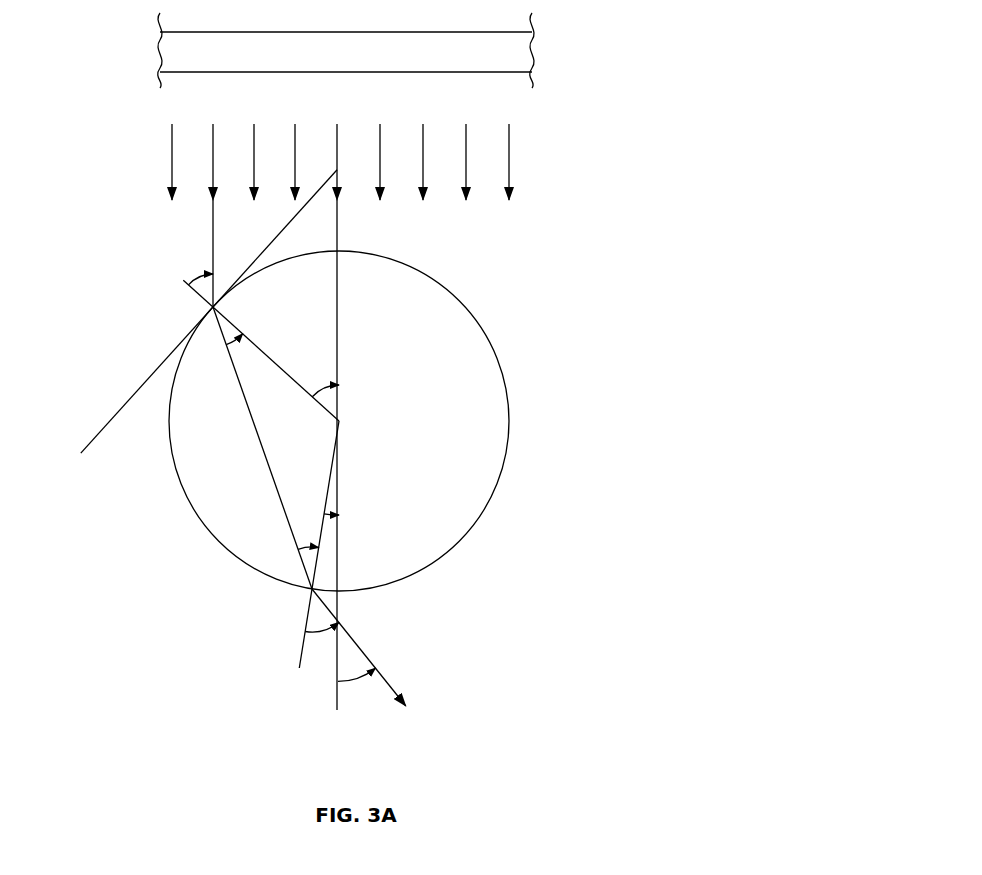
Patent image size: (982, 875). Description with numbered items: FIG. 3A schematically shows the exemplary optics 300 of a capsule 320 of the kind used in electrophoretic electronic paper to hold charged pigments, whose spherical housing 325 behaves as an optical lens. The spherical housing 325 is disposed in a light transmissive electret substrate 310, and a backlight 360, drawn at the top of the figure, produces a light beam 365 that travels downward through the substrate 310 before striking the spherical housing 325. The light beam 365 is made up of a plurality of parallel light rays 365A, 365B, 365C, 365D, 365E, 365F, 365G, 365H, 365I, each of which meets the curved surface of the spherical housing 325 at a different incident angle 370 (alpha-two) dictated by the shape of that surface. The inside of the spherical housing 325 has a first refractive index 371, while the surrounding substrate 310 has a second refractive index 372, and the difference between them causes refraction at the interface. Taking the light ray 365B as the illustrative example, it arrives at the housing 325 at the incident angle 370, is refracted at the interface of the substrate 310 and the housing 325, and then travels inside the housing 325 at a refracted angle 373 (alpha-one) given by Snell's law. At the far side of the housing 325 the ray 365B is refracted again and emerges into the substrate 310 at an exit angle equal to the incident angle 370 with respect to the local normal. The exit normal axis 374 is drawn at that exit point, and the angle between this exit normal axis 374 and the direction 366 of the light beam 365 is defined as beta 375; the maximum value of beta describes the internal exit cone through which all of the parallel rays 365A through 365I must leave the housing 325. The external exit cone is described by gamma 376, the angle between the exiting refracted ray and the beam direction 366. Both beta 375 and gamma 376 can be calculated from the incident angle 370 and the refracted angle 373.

The optics 300 is at (663, 92).
The light transmissive electret substrate 310 is at (103, 776).
The capsule 320 is at (493, 277).
The spherical housing 325 is at (513, 410).
The backlight 360 is at (318, 63).
The light beam 365 is at (150, 152).
The light ray 365A is at (171, 135).
The light ray 365B is at (212, 135).
The light ray 365C is at (253, 135).
The light ray 365D is at (294, 135).
The light ray 365E is at (336, 135).
The light ray 365F is at (379, 135).
The light ray 365G is at (422, 135).
The light ray 365H is at (465, 135).
The light ray 365I is at (508, 135).
The direction of the light beam 366 is at (348, 557).
The incident angle 370 is at (170, 242).
The first refractive index 371 is at (402, 330).
The second refractive index 372 is at (130, 340).
The refracted angle 373 is at (263, 400).
The exit normal axis 374 is at (307, 611).
The angle beta 375 is at (368, 492).
The angle gamma 376 is at (362, 718).